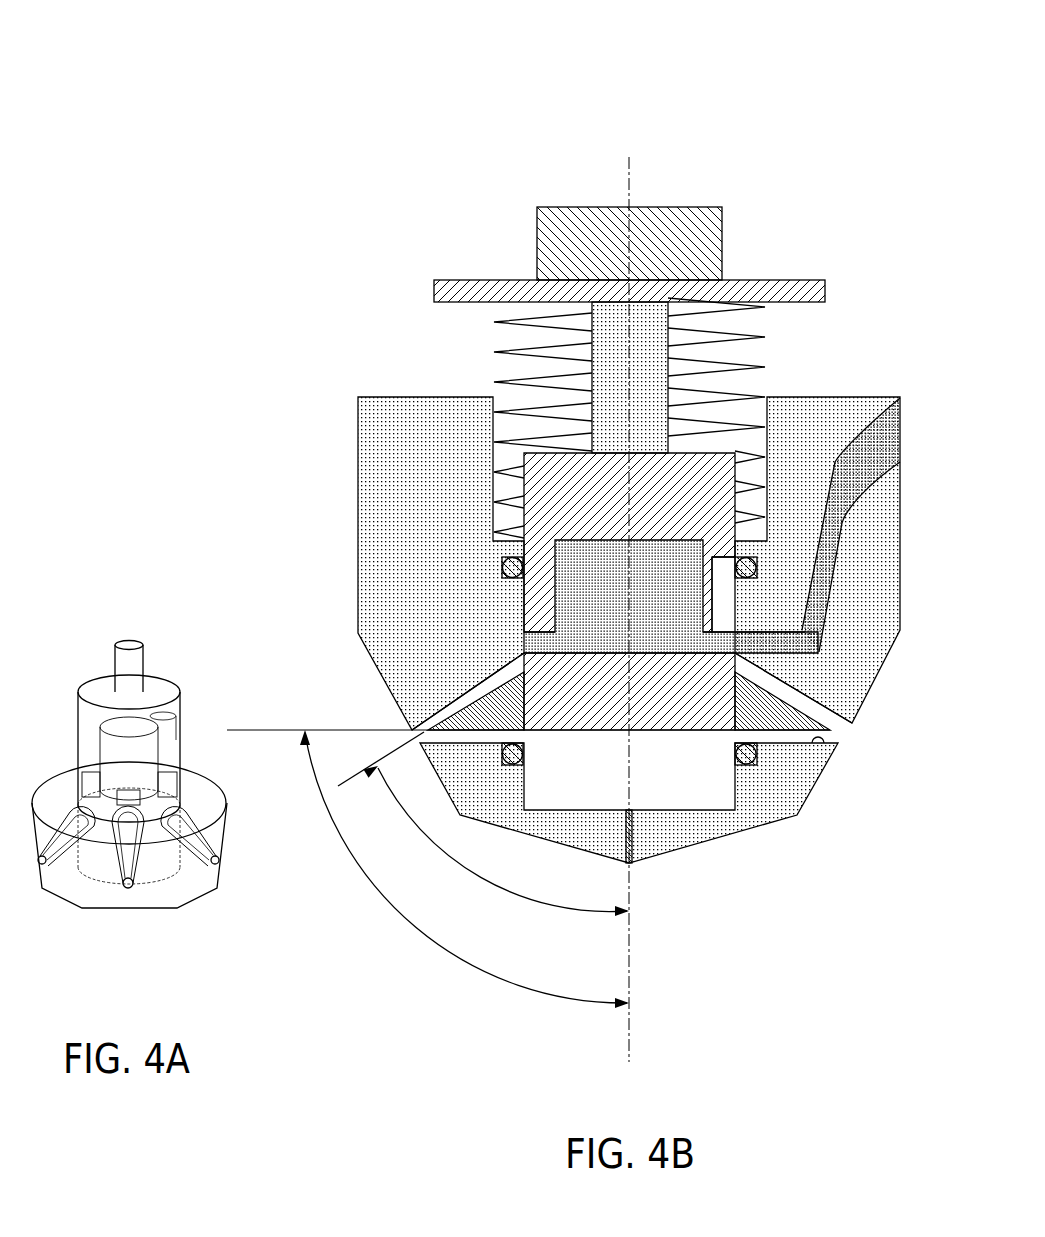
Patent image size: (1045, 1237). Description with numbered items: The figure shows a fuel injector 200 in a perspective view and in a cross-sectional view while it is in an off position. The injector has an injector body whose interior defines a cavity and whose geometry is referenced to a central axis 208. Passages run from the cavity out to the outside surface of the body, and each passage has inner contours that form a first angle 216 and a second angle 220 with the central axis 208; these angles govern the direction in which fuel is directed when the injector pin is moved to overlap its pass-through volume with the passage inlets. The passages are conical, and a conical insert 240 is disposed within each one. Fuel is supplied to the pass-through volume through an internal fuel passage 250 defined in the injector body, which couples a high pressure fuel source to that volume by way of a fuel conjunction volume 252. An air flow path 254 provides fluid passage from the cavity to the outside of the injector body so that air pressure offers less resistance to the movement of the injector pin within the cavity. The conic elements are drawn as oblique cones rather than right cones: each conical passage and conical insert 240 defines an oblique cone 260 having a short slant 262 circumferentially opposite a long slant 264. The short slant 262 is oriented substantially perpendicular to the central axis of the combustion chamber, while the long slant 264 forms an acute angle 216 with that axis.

The fuel injector 200 is at (378, 98).
The central axis 208 is at (633, 960).
The first angle 216 is at (545, 903).
The second angle 220 is at (545, 995).
The conical insert 240 is at (468, 717).
The internal fuel passage 250 is at (880, 443).
The fuel conjunction volume 252 is at (725, 607).
The air flow path 254 is at (633, 866).
The oblique cone 260 is at (763, 705).
The short slant 262 is at (773, 732).
The long slant 264 is at (757, 683).